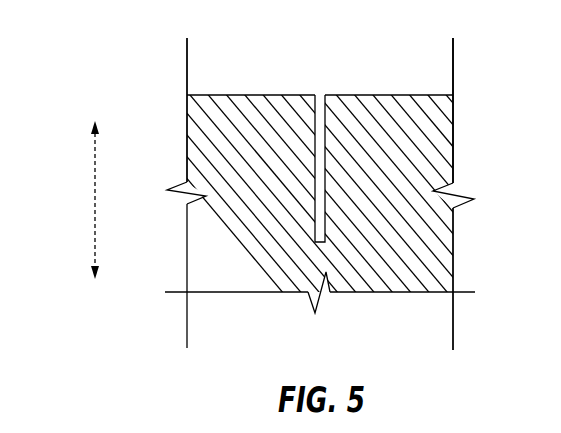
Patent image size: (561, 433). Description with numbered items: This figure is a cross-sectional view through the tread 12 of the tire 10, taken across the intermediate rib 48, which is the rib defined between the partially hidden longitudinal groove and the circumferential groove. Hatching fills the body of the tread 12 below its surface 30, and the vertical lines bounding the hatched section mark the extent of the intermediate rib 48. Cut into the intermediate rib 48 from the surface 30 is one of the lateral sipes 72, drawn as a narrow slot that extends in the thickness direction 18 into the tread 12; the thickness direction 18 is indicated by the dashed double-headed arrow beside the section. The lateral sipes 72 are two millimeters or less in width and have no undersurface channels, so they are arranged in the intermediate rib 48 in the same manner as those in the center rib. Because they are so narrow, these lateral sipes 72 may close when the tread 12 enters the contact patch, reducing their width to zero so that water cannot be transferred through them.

The assembly 10 is at (127, 58).
The tread 12 is at (216, 221).
The thickness direction 18 is at (93, 205).
The surface 30 is at (251, 84).
The intermediate rib 48 is at (447, 123).
The lateral sipe 72 is at (327, 164).